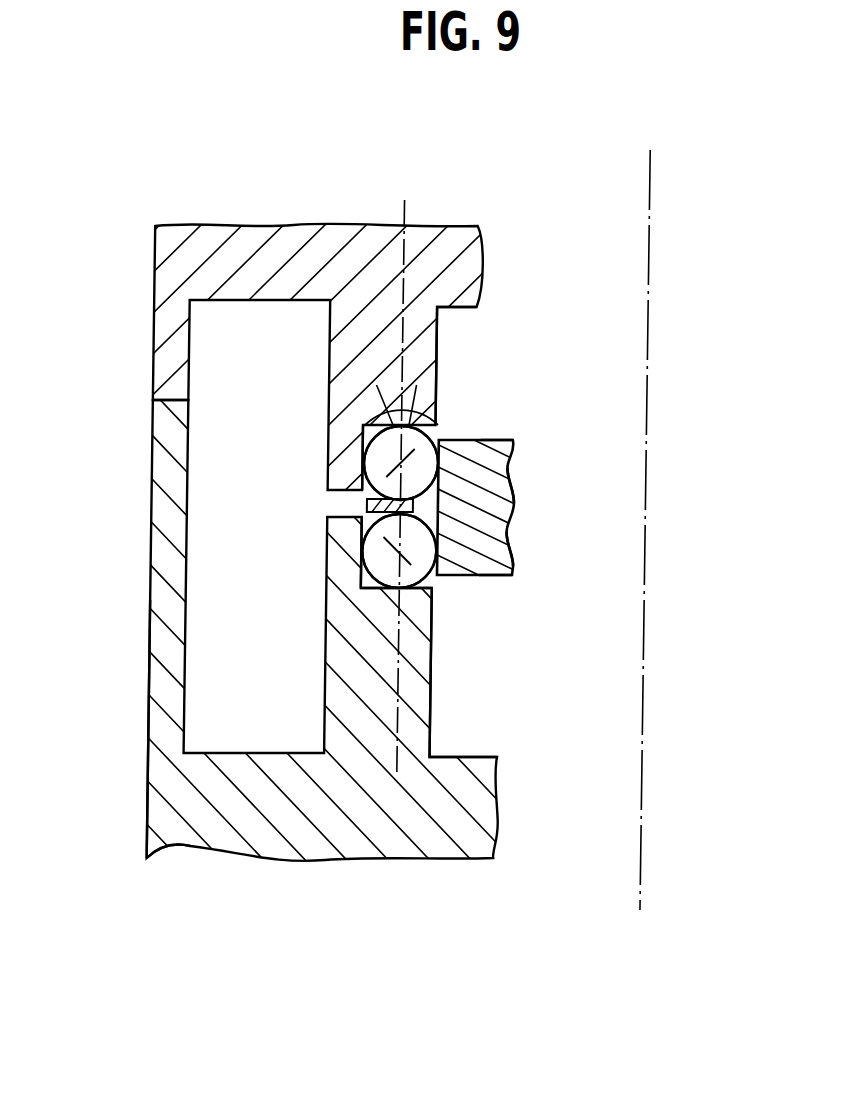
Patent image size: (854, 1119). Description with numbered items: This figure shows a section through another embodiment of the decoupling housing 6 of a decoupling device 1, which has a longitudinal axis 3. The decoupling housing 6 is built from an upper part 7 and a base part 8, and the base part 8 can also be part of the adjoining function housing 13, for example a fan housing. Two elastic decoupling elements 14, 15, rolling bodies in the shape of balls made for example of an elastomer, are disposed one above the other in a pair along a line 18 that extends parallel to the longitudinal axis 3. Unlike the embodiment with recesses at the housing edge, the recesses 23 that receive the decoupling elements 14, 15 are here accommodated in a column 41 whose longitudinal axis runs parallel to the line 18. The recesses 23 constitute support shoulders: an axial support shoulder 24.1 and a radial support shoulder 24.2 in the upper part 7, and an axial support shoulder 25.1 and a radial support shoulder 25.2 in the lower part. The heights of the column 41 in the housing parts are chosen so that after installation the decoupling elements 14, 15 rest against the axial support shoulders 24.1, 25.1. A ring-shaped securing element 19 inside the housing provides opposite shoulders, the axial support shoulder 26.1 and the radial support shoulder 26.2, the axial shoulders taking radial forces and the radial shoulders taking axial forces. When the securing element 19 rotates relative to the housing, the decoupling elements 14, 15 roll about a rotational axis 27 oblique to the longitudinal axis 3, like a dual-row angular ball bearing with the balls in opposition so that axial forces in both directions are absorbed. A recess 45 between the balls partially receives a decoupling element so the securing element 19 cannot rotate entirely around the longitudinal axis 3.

The decoupling device 1 is at (497, 416).
The longitudinal axis 3 is at (646, 893).
The decoupling housing 6 is at (152, 530).
The upper part 7 is at (152, 331).
The base part 8 is at (95, 729).
The function housing 13 is at (152, 678).
The decoupling element 14 is at (407, 425).
The decoupling element 15 is at (410, 589).
The line 18 is at (399, 758).
The securing element 19 is at (514, 470).
The recess 23 is at (372, 428).
The axial support shoulder 24.1 is at (366, 449).
The radial support shoulder 24.2 is at (372, 422).
The axial support shoulder 25.1 is at (362, 542).
The radial support shoulder 25.2 is at (370, 588).
The axial support shoulder 26.1 is at (513, 507).
The radial support shoulder 26.2 is at (513, 531).
The rotational axis 27 is at (513, 441).
The column 41 is at (418, 357).
The recess 45 is at (367, 504).